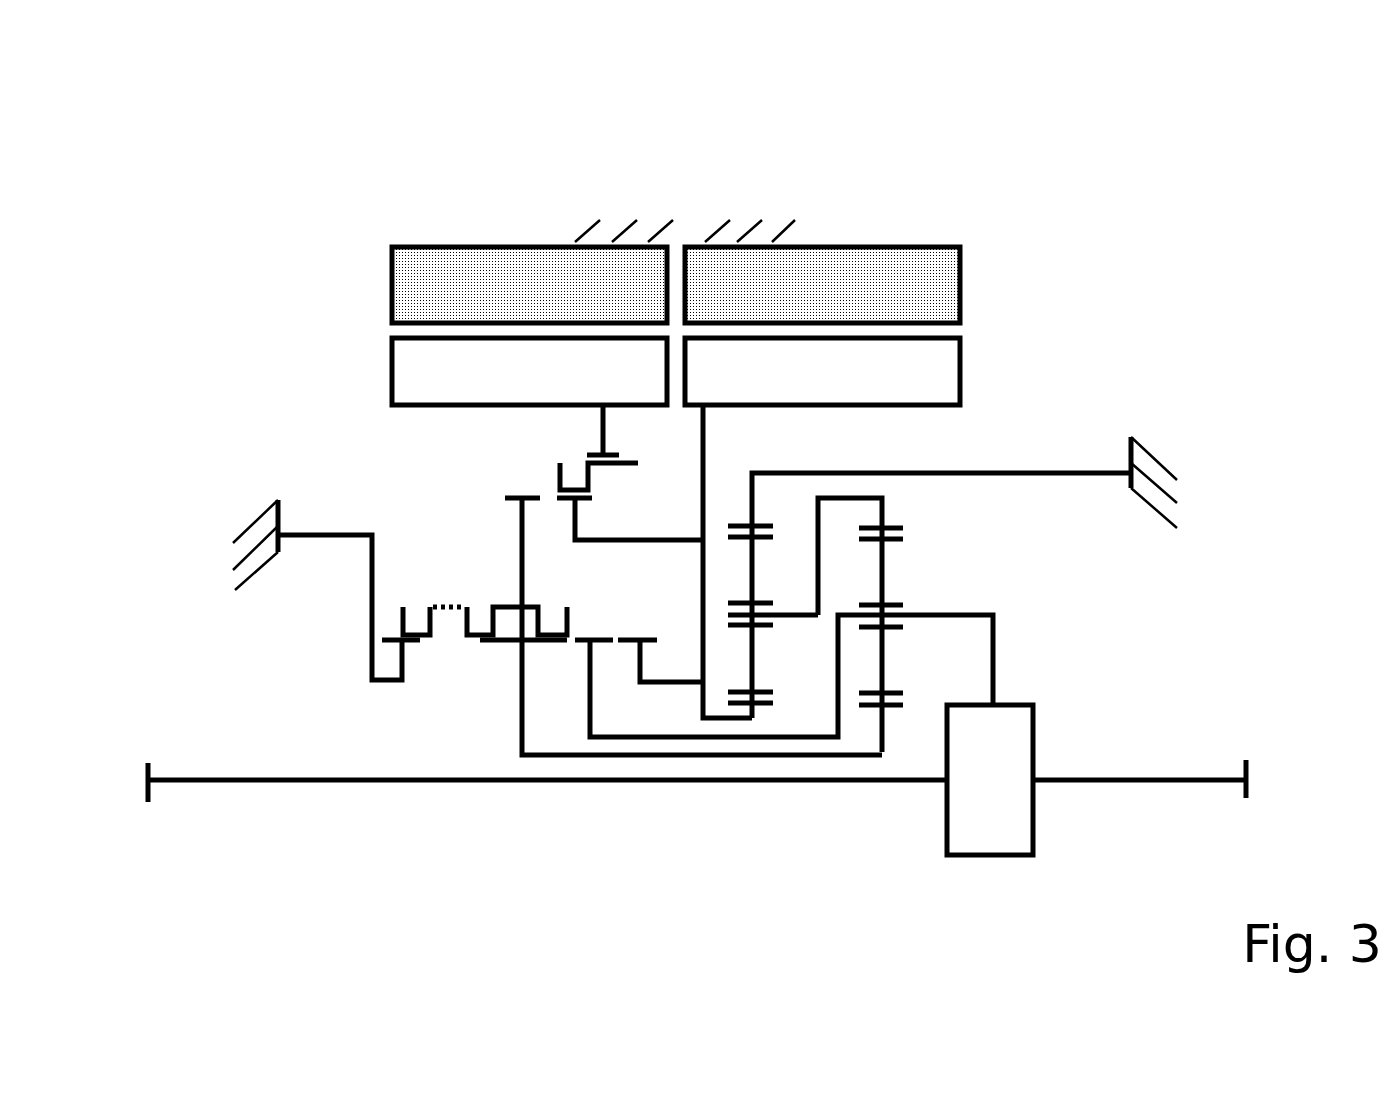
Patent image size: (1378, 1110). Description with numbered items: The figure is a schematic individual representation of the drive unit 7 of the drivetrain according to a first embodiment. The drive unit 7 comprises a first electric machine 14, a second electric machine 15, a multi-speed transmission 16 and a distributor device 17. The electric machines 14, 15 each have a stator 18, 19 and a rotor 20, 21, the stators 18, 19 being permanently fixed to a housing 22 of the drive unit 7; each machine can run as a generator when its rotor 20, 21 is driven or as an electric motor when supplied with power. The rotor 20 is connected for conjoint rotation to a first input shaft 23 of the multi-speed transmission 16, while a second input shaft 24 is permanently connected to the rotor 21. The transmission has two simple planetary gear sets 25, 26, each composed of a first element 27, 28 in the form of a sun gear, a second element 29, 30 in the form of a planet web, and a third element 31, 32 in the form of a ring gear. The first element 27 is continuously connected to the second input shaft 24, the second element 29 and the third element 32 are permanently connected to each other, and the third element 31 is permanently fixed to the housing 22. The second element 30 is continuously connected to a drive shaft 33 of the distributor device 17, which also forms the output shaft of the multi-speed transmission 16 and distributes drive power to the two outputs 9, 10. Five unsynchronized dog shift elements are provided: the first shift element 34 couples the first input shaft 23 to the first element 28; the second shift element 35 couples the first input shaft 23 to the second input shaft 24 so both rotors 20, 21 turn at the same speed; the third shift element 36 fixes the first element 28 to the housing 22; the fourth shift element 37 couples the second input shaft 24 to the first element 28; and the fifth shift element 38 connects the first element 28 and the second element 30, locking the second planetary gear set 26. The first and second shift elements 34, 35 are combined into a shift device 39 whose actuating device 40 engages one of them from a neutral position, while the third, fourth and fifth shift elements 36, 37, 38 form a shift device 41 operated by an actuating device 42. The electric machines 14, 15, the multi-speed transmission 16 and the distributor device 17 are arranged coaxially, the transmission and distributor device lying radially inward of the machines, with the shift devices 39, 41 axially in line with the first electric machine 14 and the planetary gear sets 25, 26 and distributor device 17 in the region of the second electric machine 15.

The drive unit 7 is at (250, 137).
The output 9 is at (1246, 795).
The output 10 is at (148, 802).
The first electric machine 14 is at (527, 198).
The second electric machine 15 is at (833, 200).
The multi-speed transmission 16 is at (248, 405).
The distributor device 17 is at (1000, 823).
The stator 18 is at (455, 270).
The stator 19 is at (865, 265).
The rotor 20 is at (412, 343).
The rotor 21 is at (920, 345).
The housing 22 is at (637, 232).
The first input shaft 23 is at (600, 431).
The second input shaft 24 is at (702, 415).
The first planetary gear set 25 is at (749, 755).
The second planetary gear set 26 is at (880, 776).
The first element 27 is at (752, 722).
The first element 28 is at (882, 735).
The second element 29 is at (785, 615).
The second element 30 is at (920, 614).
The third element 31 is at (750, 515).
The third element 32 is at (885, 517).
The drive shaft 33 is at (995, 680).
The first shift element 34 is at (553, 498).
The second shift element 35 is at (590, 498).
The third shift element 36 is at (412, 648).
The fourth shift element 37 is at (614, 640).
The fifth shift element 38 is at (567, 640).
The shift device 39 is at (538, 465).
The actuating device 40 is at (625, 462).
The shift device 41 is at (466, 638).
The actuating device 42 is at (440, 668).